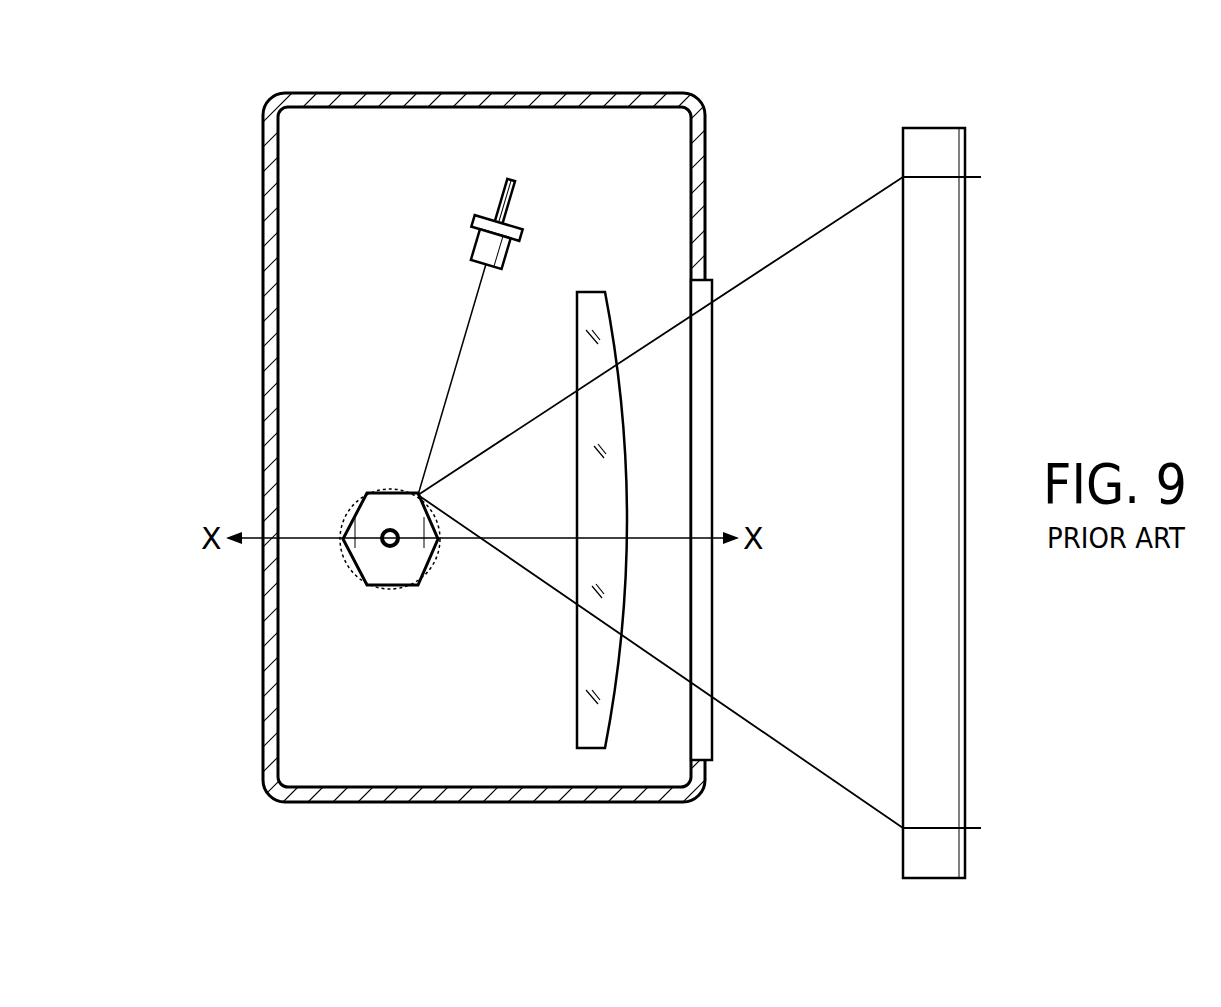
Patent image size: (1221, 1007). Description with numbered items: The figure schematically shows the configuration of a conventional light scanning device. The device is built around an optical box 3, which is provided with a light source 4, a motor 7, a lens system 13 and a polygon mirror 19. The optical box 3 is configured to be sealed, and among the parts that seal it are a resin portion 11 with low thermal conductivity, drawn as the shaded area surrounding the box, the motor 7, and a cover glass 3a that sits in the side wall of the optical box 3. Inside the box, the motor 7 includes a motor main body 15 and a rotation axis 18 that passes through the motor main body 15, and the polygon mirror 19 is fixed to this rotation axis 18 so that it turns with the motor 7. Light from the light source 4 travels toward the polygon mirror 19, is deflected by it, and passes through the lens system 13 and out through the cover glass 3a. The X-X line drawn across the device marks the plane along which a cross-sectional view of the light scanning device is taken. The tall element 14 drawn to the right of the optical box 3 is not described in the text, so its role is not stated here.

The optical box 3 is at (686, 70).
The cover glass 3a is at (706, 425).
The light source 4 is at (480, 235).
The motor 7 is at (354, 474).
The resin portion 11 is at (364, 100).
The lens system 13 is at (597, 298).
The screen / detection plate 14 is at (915, 142).
The motor main body 15 is at (383, 590).
The rotation axis 18 is at (390, 527).
The polygon mirror 19 is at (416, 555).